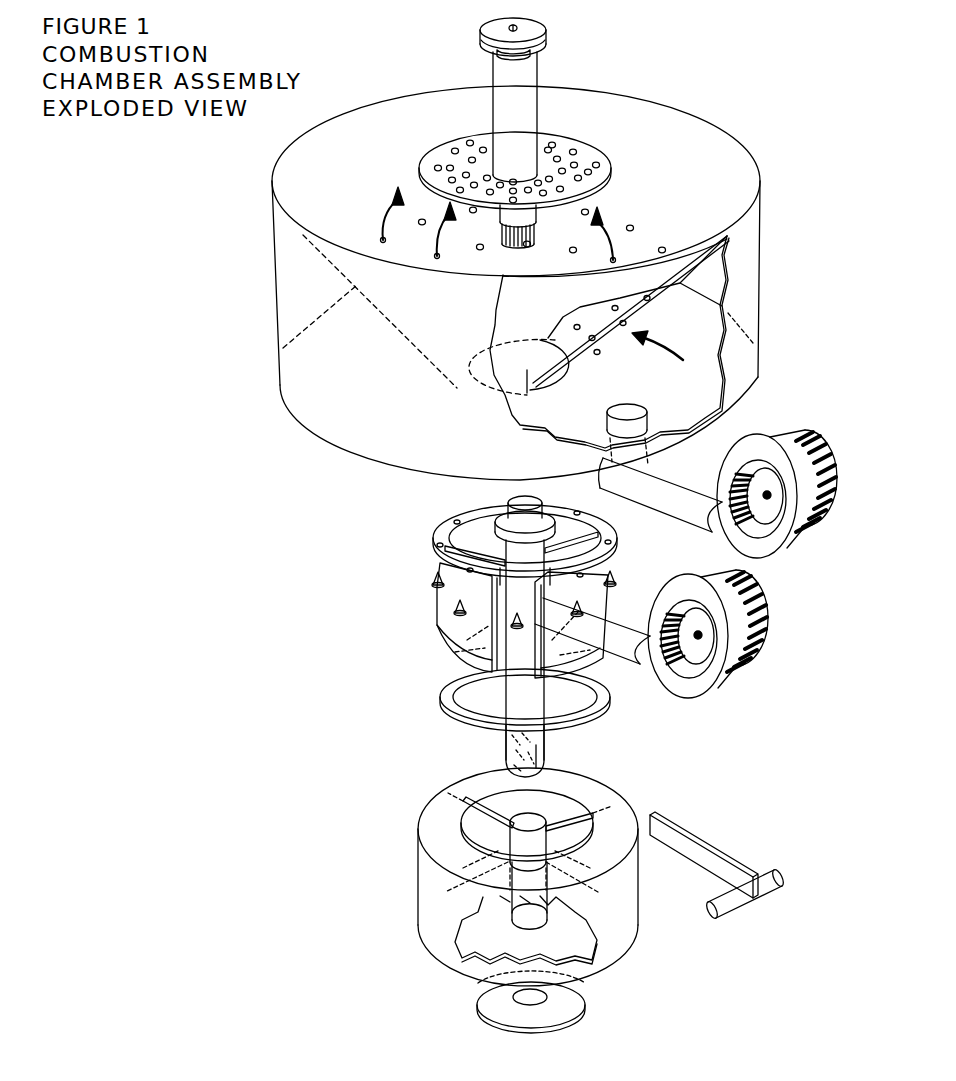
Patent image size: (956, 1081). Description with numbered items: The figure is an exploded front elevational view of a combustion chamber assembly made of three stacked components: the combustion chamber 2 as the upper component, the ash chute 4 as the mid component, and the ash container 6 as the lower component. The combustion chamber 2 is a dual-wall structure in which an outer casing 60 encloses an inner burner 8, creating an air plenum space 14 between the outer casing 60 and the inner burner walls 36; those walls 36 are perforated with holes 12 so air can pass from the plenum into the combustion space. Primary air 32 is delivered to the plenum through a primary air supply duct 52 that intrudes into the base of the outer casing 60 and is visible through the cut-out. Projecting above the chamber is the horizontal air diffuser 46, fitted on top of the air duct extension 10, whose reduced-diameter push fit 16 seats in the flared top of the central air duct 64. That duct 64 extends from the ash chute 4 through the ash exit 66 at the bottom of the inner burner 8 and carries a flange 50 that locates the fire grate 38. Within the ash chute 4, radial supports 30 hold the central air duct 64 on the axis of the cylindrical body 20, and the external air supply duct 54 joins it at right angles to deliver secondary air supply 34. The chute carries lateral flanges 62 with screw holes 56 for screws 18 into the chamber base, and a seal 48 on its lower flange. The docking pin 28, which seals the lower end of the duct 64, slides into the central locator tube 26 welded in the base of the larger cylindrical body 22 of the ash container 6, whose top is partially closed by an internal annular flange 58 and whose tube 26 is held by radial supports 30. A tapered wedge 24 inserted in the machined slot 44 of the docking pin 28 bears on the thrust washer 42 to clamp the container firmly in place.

The combustion chamber 2 is at (357, 38).
The ash chute 4 is at (216, 792).
The ash container 6 is at (218, 803).
The inner burner 8 is at (689, 177).
The air duct extension 10 is at (507, 115).
The holes 12 is at (393, 221).
The air plenum space 14 is at (707, 337).
The push fit (reduced diameter) 16 is at (535, 240).
The screws 18 is at (460, 610).
The cylindrical body (ash chute wall) 20 is at (460, 628).
The cylindrical body (ash container) 22 is at (437, 902).
The tapered wedge 24 is at (705, 845).
The central locator tube 26 is at (498, 851).
The docking pin 28 is at (535, 728).
The radial supports 30 is at (462, 540).
The primary air 32 is at (792, 552).
The secondary air supply 34 is at (740, 677).
The inner burner walls 36 is at (613, 350).
The fire grate 38 is at (587, 155).
The thrust washer 42 is at (500, 1007).
The machined slot 44 is at (540, 757).
The horizontal air diffuser 46 is at (541, 32).
The seal 48 is at (458, 697).
The flange 50 is at (503, 503).
The primary air supply duct 52 is at (660, 491).
The external air supply duct 54 is at (603, 606).
The screw holes 56 is at (455, 572).
The internal annular flange 58 is at (480, 785).
The outer casing 60 is at (338, 356).
The lateral flanges 62 is at (455, 555).
The central air duct 64 is at (535, 571).
The ash exit 66 is at (548, 372).